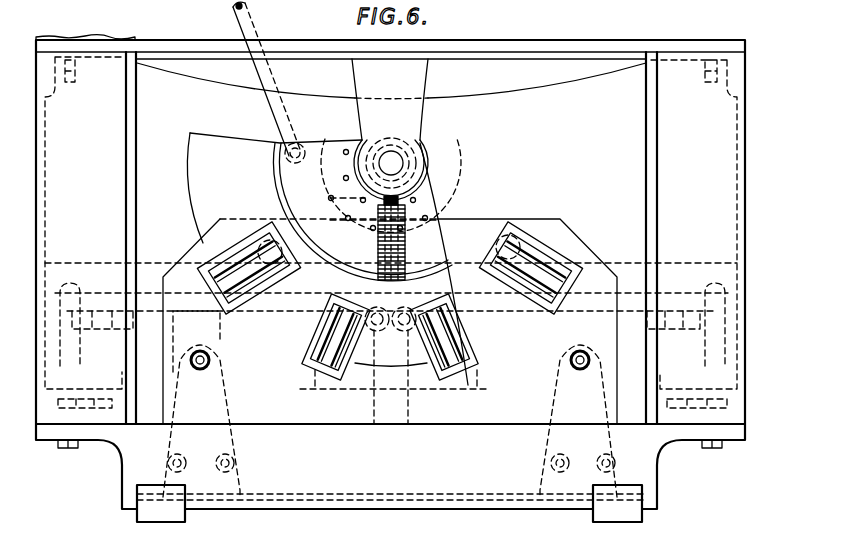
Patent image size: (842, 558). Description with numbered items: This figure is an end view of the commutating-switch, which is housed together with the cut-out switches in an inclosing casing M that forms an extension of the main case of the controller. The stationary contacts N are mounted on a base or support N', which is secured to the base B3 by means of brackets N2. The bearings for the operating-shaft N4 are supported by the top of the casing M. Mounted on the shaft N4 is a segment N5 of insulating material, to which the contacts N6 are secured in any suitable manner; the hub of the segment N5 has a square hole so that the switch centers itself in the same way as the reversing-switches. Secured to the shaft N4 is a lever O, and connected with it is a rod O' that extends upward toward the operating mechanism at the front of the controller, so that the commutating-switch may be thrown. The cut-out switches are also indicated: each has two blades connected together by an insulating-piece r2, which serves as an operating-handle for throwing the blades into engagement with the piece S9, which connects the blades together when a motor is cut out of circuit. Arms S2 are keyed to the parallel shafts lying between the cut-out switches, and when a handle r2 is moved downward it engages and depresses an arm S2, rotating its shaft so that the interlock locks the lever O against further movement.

The base B3 is at (390, 278).
The inclosing casing M is at (391, 232).
The insulating-piece r2 is at (70, 290).
The short-circuiting piece S9 is at (390, 363).
The brackets N2 is at (240, 450).
The contacts N6 is at (391, 380).
The operating-shaft N4 is at (397, 160).
The segment N5 is at (427, 204).
The lever O is at (373, 169).
The rod O' is at (267, 79).
The stationary contacts N is at (371, 301).
The base or support N' is at (532, 247).
The arms S2 is at (389, 262).